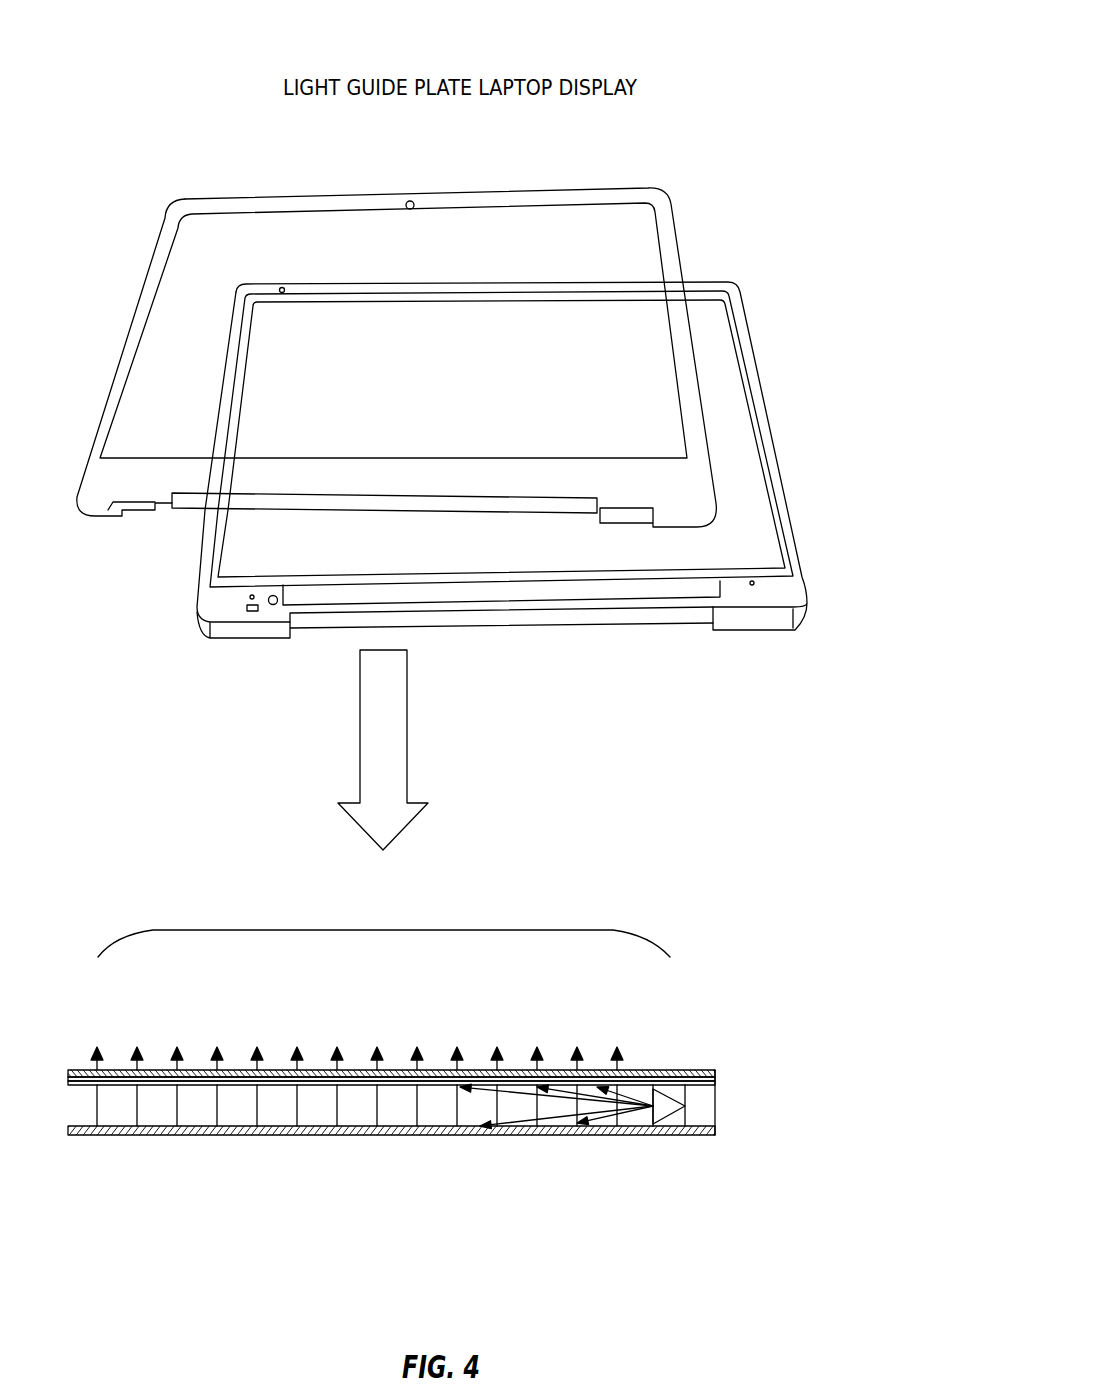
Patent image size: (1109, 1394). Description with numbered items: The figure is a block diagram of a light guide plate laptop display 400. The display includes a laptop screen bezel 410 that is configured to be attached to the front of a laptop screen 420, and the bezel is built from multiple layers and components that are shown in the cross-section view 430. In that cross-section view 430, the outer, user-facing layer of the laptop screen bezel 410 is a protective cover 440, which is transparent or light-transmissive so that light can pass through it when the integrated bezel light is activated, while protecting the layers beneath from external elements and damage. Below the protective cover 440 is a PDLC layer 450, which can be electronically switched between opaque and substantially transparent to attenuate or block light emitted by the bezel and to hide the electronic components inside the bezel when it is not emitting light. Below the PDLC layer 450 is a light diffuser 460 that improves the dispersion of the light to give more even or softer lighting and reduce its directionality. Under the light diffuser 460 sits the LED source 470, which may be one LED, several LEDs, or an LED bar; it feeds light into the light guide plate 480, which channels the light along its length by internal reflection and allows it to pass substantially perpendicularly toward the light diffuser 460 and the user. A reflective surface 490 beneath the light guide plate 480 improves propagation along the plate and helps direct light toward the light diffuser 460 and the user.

The light guide plate laptop display 400 is at (818, 33).
The laptop screen bezel 410 is at (707, 178).
The laptop screen 420 is at (727, 347).
The cross-section view 430 is at (383, 927).
The protective cover 440 is at (670, 1070).
The PDLC layer 450 is at (718, 1076).
The light diffuser 460 is at (718, 1083).
The LED source 470 is at (700, 1118).
The light guide plate 480 is at (152, 1117).
The reflective surface 490 is at (312, 1137).